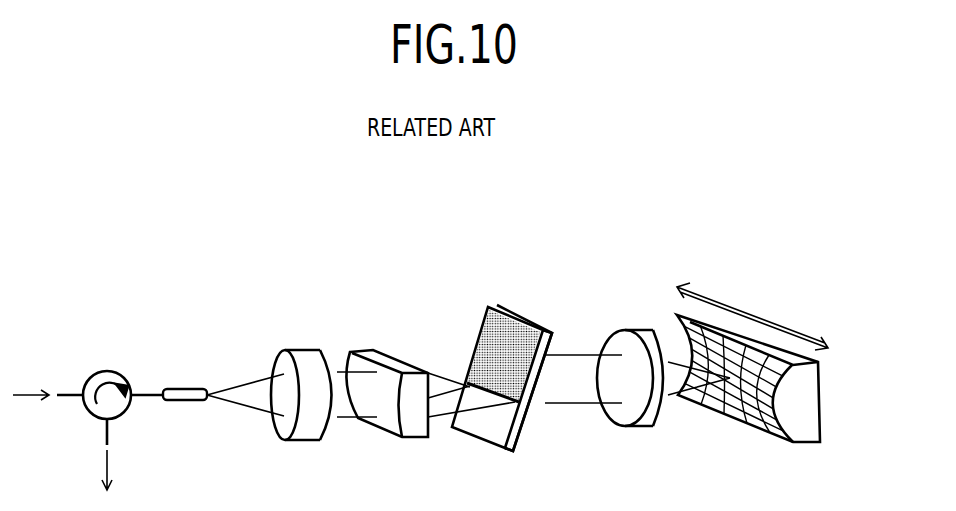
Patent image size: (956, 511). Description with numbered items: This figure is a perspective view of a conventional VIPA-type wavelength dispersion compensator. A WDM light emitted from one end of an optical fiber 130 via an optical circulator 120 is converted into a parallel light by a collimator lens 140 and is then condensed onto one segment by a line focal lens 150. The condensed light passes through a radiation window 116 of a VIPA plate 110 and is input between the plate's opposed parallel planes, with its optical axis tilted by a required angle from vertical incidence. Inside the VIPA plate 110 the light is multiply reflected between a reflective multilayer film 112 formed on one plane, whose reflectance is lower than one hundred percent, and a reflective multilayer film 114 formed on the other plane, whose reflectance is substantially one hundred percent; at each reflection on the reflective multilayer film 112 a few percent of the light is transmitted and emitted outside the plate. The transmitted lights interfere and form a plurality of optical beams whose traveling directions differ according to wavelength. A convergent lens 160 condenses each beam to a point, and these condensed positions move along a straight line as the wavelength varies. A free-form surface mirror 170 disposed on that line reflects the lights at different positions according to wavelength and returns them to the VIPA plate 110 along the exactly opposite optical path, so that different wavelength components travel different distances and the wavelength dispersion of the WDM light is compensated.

The VIPA plate 110 is at (541, 306).
The reflective multilayer film 112 is at (523, 427).
The reflective multilayer film 114 is at (488, 338).
The radiation window 116 is at (483, 414).
The optical circulator 120 is at (107, 371).
The optical fiber 130 is at (183, 387).
The collimator lens 140 is at (293, 347).
The line focal lens 150 is at (367, 347).
The convergent lens 160 is at (637, 327).
The free-form surface mirror 170 is at (753, 430).